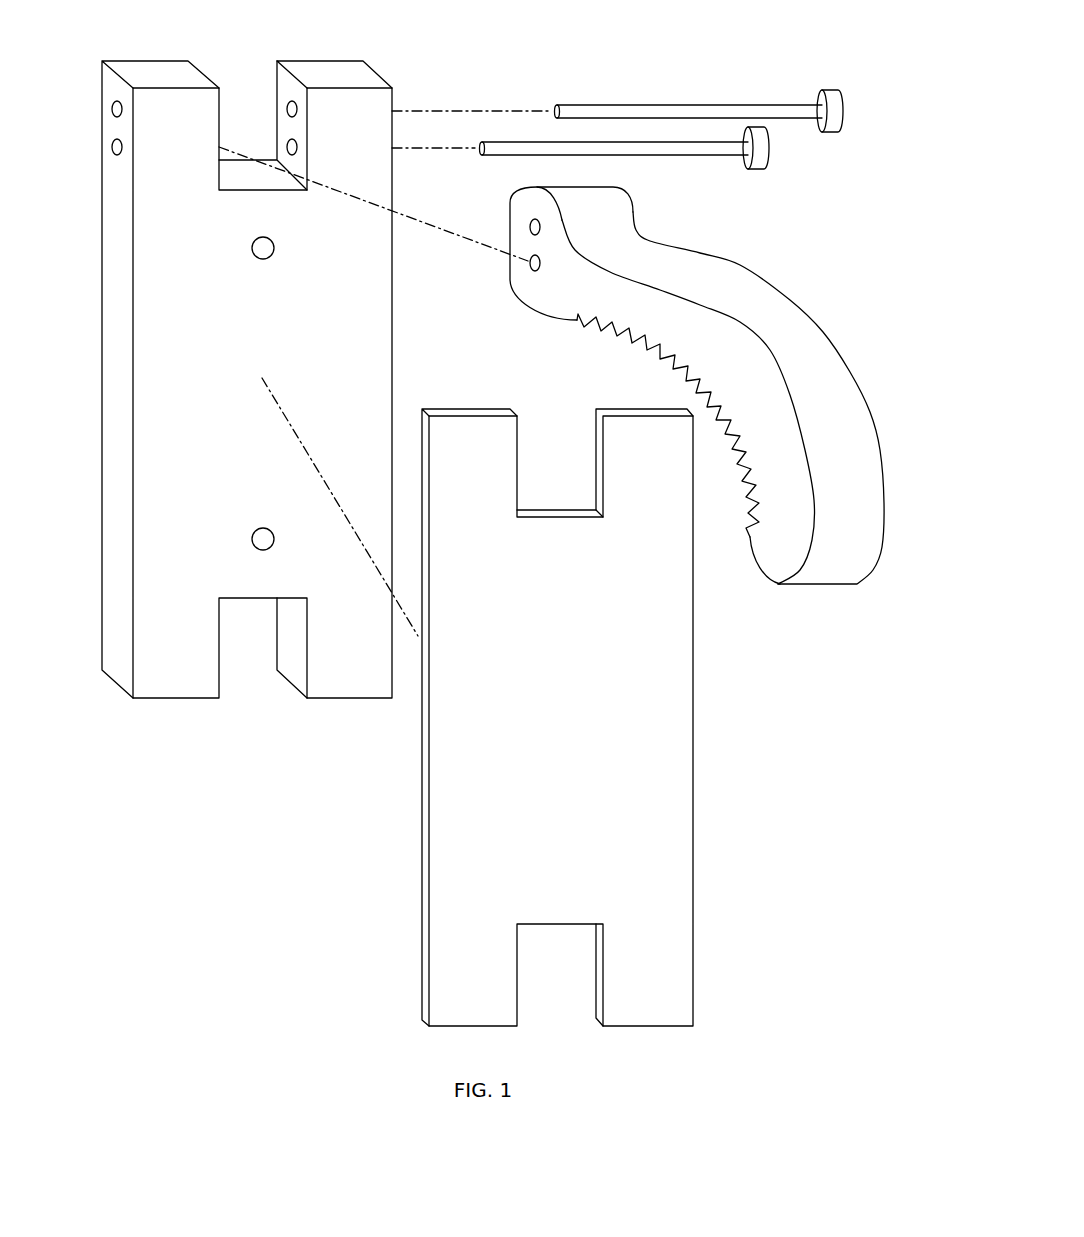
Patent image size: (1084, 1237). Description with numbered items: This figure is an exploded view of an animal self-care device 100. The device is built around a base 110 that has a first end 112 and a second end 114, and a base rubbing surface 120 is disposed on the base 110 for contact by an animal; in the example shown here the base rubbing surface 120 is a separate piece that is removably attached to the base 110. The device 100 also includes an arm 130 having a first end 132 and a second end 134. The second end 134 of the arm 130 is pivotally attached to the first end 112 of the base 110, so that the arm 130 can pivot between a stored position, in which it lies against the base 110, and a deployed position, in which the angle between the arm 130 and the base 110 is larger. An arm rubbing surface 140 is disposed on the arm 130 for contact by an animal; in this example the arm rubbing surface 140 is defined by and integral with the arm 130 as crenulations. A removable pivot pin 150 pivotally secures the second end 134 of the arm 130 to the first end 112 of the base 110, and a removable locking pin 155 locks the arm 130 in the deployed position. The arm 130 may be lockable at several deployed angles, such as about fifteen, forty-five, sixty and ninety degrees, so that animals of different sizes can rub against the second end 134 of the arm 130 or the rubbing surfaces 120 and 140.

The animal self-care device 100 is at (785, 53).
The base 110 is at (326, 375).
The first end of the base 112 is at (418, 93).
The second end of the base 114 is at (167, 719).
The base rubbing surface 120 is at (640, 726).
The arm 130 is at (697, 419).
The first end of the arm 132 is at (837, 596).
The second end of the arm 134 is at (668, 218).
The arm rubbing surface 140 is at (648, 350).
The removable pivot pin 150 is at (769, 148).
The removable locking pin 155 is at (843, 111).